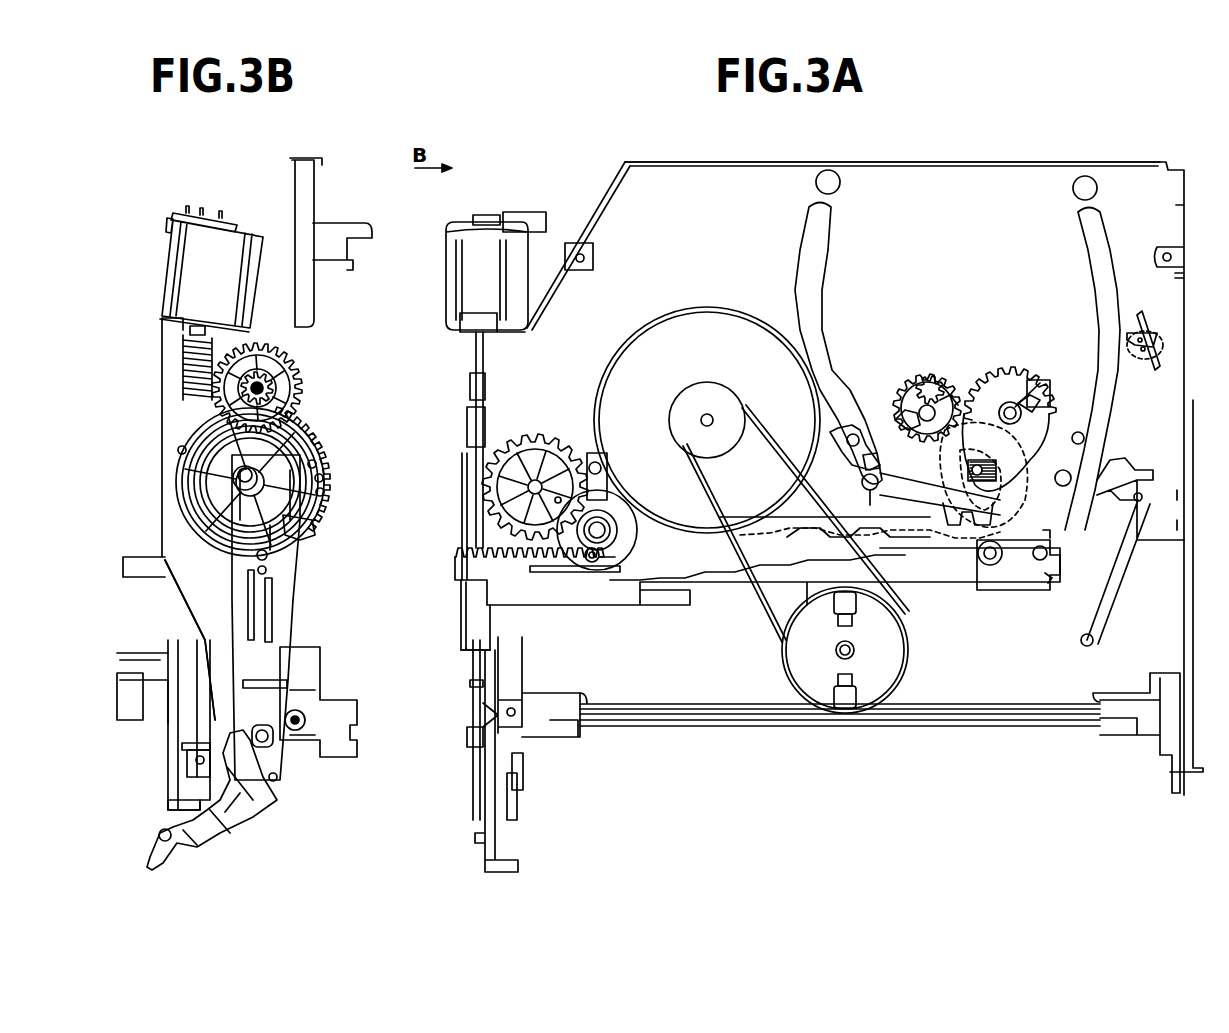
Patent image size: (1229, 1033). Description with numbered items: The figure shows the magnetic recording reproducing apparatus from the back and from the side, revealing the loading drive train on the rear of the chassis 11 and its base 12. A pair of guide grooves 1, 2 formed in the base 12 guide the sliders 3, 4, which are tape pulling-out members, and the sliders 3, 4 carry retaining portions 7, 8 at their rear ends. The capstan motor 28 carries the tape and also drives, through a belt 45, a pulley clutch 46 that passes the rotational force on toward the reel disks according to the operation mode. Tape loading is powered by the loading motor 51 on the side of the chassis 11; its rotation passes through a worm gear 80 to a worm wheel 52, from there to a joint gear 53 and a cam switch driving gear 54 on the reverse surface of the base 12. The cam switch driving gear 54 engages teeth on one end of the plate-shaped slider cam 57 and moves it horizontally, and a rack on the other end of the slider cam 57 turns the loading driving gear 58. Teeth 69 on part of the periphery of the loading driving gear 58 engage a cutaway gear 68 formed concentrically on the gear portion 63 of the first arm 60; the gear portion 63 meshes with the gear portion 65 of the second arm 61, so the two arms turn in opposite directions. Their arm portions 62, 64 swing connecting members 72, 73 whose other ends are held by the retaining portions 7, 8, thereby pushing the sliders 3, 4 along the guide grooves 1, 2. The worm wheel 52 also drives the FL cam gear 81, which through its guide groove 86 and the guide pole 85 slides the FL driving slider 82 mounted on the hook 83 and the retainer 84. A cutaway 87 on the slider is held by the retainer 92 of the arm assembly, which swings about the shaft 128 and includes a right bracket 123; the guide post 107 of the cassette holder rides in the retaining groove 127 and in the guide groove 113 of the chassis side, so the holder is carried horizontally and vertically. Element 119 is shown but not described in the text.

In FIG. 3A, the guide groove 1 is at (832, 245).
In FIG. 3A, the guide groove 2 is at (1080, 242).
In FIG. 3A, the slider 3 is at (843, 420).
In FIG. 3A, the slider 4 is at (1095, 425).
In FIG. 3A, the retaining portion 7 is at (880, 490).
In FIG. 3A, the retaining portion 8 is at (1080, 470).
In FIG. 3A, the chassis 11 is at (756, 162).
In FIG. 3A, the base 12 is at (942, 168).
In FIG. 3A, the capstan motor 28 is at (712, 307).
In FIG. 3A, the belt 45 is at (707, 603).
In FIG. 3A, the pulley clutch 46 is at (822, 680).
In FIG. 3B, the loading motor 51 is at (172, 262).
In FIG. 3A, the loading motor 51 is at (455, 290).
In FIG. 3B, the worm wheel 52 is at (302, 385).
In FIG. 3A, the worm wheel 52 is at (475, 388).
In FIG. 3A, the joint gear 53 is at (542, 435).
In FIG. 3A, the cam switch driving gear 54 is at (568, 548).
In FIG. 3A, the slider cam 57 is at (690, 597).
In FIG. 3A, the loading driving gear 58 is at (1020, 560).
In FIG. 3A, the first arm 60 is at (910, 385).
In FIG. 3A, the second arm 61 is at (1012, 372).
In FIG. 3A, the arm portion 62 is at (980, 600).
In FIG. 3A, the gear portion 63 is at (934, 378).
In FIG. 3A, the arm portion 64 is at (1042, 398).
In FIG. 3A, the gear portion 65 is at (1025, 395).
In FIG. 3A, the cutaway gear 68 is at (952, 400).
In FIG. 3A, the teeth 69 is at (905, 410).
In FIG. 3A, the connecting member 72 is at (880, 510).
In FIG. 3A, the connecting member 73 is at (1052, 568).
In FIG. 3B, the worm gear 80 is at (183, 390).
In FIG. 3B, the FL cam gear 81 is at (318, 452).
In FIG. 3B, the FL driving slider 82 is at (290, 595).
In FIG. 3A, the FL driving slider 82 is at (461, 650).
In FIG. 3B, the hook 83 is at (287, 683).
In FIG. 3B, the retainer 84 is at (256, 485).
In FIG. 3B, the guide pole 85 is at (268, 555).
In FIG. 3B, the guide groove 86 is at (312, 527).
In FIG. 3B, the cutaway 87 is at (268, 745).
In FIG. 3B, the retainer 92 is at (267, 760).
In FIG. 3B, the guide post 107 is at (185, 746).
In FIG. 3B, the guide groove 113 is at (185, 600).
In FIG. 3B, the bracket 119 is at (170, 805).
In FIG. 3B, the right bracket 123 is at (190, 765).
In FIG. 3B, the retaining groove 127 is at (196, 764).
In FIG. 3B, the shaft 128 is at (306, 720).